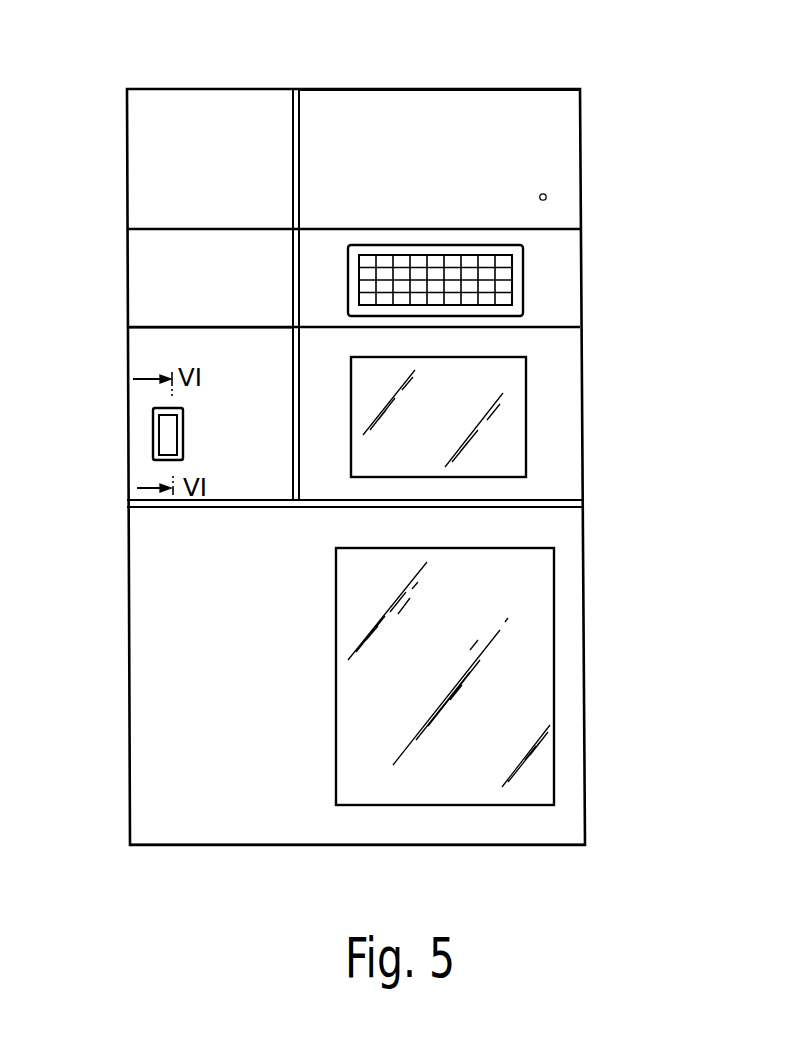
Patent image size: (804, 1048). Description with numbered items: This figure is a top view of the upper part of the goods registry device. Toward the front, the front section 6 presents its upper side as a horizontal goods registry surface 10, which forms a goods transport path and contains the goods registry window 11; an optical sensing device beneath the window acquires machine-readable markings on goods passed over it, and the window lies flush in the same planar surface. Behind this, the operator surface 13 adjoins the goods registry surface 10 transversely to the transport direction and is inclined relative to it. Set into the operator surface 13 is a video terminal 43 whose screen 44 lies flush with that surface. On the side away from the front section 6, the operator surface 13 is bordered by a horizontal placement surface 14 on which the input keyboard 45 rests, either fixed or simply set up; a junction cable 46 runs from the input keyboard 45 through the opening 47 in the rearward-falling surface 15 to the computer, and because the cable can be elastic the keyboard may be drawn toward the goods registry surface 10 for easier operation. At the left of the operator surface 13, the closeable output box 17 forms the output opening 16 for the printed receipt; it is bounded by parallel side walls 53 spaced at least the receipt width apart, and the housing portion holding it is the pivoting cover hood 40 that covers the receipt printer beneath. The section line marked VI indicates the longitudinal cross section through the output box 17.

The front section 6 is at (586, 655).
The goods registry surface 10 is at (194, 677).
The goods registry window 11 is at (410, 655).
The operator surface 13 is at (562, 375).
The placement surface 14 is at (557, 303).
The surface falling away to the rear 15 is at (503, 110).
The output opening 16 is at (150, 432).
The output box 17 is at (168, 444).
The cover hood 40 is at (238, 378).
The video terminal 43 is at (527, 405).
The screen 44 is at (512, 440).
The input keyboard 45 is at (507, 286).
The junction cable 46 is at (524, 265).
The opening 47 is at (543, 197).
The side walls 53 is at (153, 425).